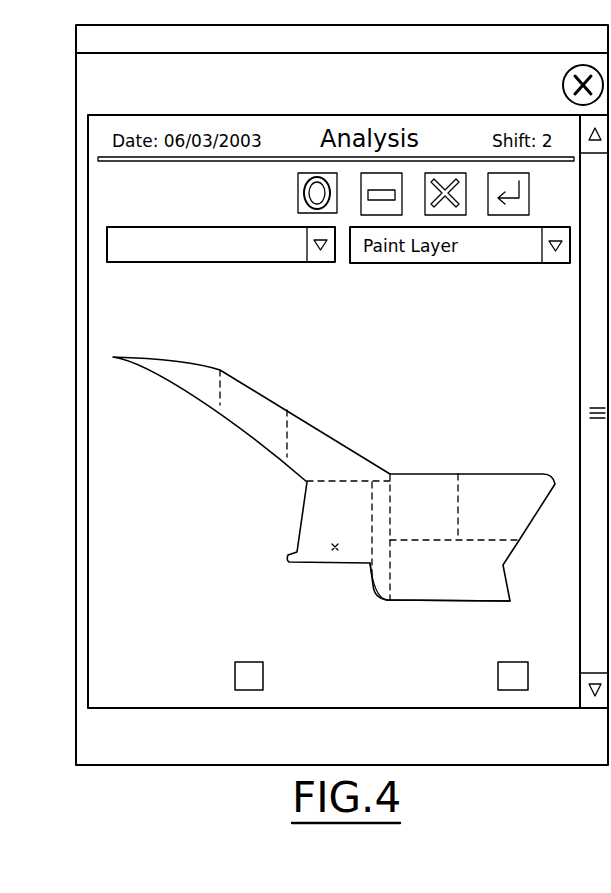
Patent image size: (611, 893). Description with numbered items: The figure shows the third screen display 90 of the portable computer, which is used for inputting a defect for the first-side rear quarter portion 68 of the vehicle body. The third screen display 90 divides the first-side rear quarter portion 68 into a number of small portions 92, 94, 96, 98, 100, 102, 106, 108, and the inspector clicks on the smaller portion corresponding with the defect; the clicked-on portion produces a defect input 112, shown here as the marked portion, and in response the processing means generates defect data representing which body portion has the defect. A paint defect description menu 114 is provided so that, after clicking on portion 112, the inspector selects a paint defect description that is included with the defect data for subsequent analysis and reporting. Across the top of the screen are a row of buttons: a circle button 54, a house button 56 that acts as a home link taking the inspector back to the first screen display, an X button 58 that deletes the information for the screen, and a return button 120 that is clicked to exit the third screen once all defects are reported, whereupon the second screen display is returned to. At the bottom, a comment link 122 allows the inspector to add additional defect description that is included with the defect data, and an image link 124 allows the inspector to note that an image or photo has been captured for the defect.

The third screen display 90 is at (528, 23).
The zoom button 54 is at (298, 197).
The house button 56 is at (361, 200).
The X button 58 is at (445, 174).
The return button 120 is at (529, 200).
The paint defect description menu 114 is at (107, 240).
The first-side rear quarter portion 68 is at (422, 374).
The small portion 92 is at (188, 367).
The small portion 94 is at (258, 397).
The small portion 96 is at (332, 443).
The small portion 98 is at (422, 482).
The small portion 100 is at (500, 480).
The small portion 108 is at (305, 513).
The defect input 112 is at (335, 551).
The small portion 106 is at (378, 585).
The small portion 102 is at (448, 583).
The image link 124 is at (200, 663).
The comment link 122 is at (448, 664).